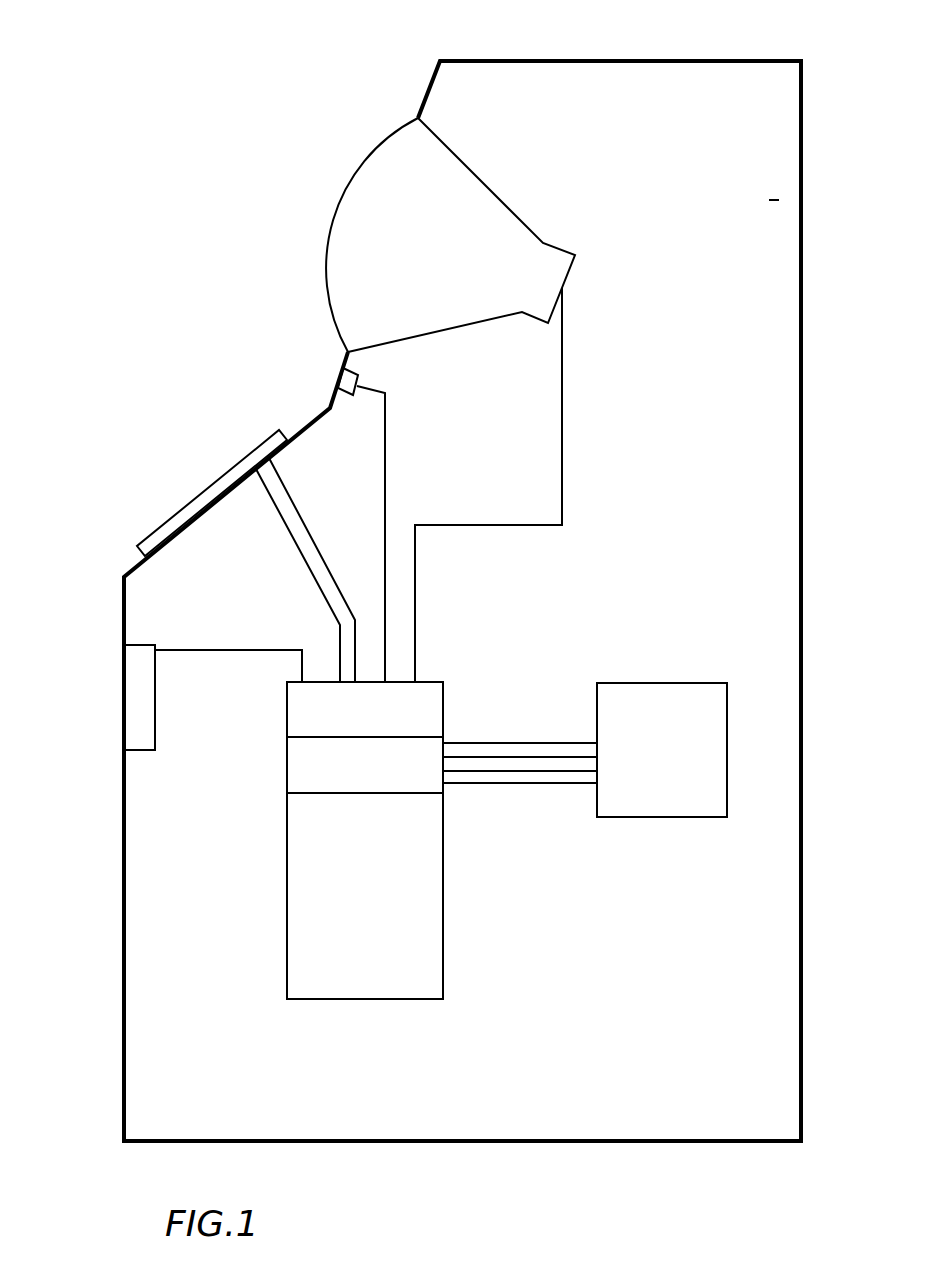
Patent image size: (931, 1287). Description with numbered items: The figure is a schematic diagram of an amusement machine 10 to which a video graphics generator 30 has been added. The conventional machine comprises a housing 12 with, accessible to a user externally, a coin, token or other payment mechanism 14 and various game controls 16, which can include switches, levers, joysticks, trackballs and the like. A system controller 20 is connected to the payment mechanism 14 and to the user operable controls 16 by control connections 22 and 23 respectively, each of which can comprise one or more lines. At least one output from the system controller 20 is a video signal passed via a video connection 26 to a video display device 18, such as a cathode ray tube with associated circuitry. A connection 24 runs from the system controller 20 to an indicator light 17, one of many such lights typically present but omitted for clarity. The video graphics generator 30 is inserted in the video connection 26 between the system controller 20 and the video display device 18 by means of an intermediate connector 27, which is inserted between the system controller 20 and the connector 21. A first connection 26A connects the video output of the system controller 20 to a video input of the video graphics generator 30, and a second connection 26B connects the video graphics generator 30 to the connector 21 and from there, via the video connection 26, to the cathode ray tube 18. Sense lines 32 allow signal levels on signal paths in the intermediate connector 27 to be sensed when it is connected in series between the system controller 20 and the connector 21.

The amusement machine 10 is at (656, 1118).
The housing 12 is at (803, 578).
The payment mechanism 14 is at (123, 694).
The game controls 16 is at (218, 475).
The indicator light 17 is at (340, 378).
The video display device 18 is at (499, 195).
The system controller 20 is at (287, 910).
The connector 21 is at (428, 682).
The control connection 22 is at (198, 652).
The control connection 23 is at (293, 545).
The connection 24 is at (388, 402).
The video connection 26 is at (564, 490).
The first connection 26A is at (486, 783).
The second connection 26B is at (550, 771).
The intermediate connector 27 is at (287, 762).
The video graphics generator 30 is at (657, 683).
The sense lines 32 is at (491, 743).